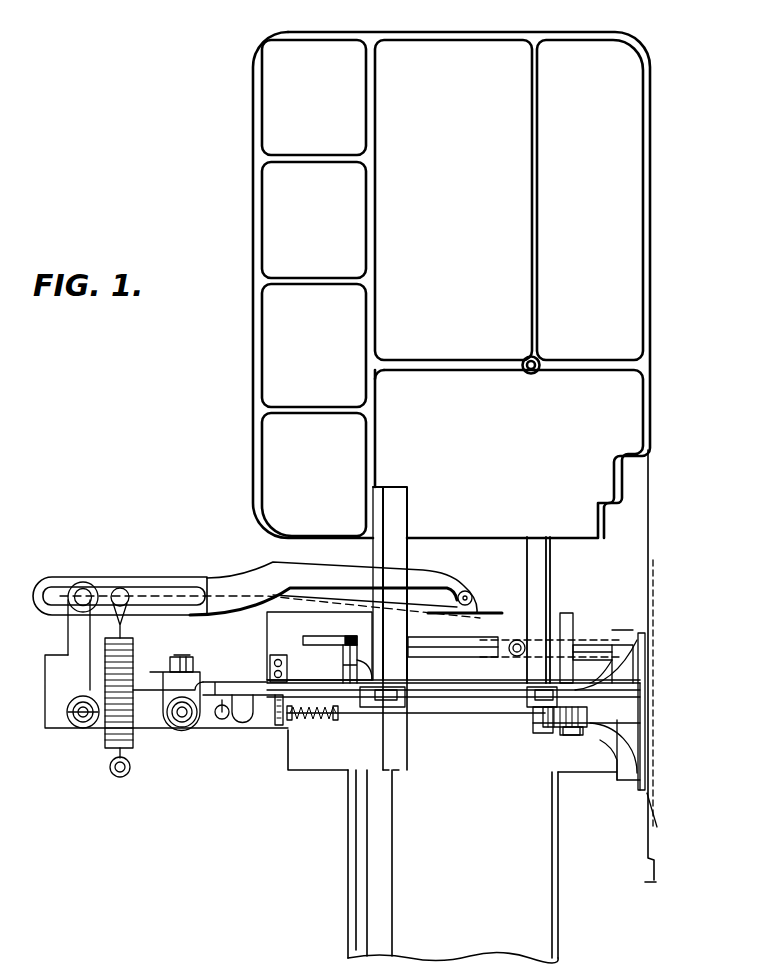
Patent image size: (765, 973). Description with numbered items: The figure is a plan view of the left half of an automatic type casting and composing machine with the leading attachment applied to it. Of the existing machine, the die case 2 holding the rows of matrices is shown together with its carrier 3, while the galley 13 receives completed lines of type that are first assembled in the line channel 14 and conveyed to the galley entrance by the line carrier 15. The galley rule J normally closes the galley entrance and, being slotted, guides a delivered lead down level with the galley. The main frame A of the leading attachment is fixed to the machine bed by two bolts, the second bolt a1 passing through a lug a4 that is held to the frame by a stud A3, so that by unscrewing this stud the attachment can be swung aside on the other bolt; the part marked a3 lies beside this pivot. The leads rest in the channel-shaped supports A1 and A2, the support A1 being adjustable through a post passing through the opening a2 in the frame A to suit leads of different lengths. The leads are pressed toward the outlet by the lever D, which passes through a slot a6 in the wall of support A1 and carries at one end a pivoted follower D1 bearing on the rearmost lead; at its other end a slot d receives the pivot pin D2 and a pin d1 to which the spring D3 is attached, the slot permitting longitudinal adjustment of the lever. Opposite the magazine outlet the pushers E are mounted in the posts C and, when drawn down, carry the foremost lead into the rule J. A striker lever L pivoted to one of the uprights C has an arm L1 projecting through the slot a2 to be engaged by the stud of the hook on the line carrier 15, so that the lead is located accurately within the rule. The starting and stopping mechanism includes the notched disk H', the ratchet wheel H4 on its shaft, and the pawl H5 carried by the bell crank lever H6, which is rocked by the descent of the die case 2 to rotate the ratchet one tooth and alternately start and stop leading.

The main frame A is at (453, 691).
The guide or support A1 is at (405, 511).
The guide or support A2 is at (559, 545).
The stud A3 is at (188, 664).
The bolt a1 is at (180, 728).
The opening or slot a2 is at (475, 645).
The pin a3 is at (80, 730).
The lug a4 is at (200, 722).
The slot a6 is at (378, 537).
The face plates or posts C is at (370, 708).
The lever D is at (248, 590).
The plate or follower D1 is at (470, 592).
The pivot pin D2 is at (86, 595).
The spring D3 is at (133, 663).
The slot d is at (62, 592).
The pin d1 is at (124, 592).
The slides or pushers E is at (388, 700).
The disk H' is at (583, 738).
The ratchet wheel H4 is at (588, 714).
The pawl H5 is at (600, 697).
The bell crank lever H6 is at (540, 735).
The galley rule J is at (276, 728).
The lever L is at (343, 676).
The arm L1 is at (335, 640).
The die case 2 is at (615, 778).
The carrier 3 is at (630, 670).
The galley 13 is at (453, 821).
The line channel 14 is at (585, 680).
The line carrier 15 is at (597, 645).